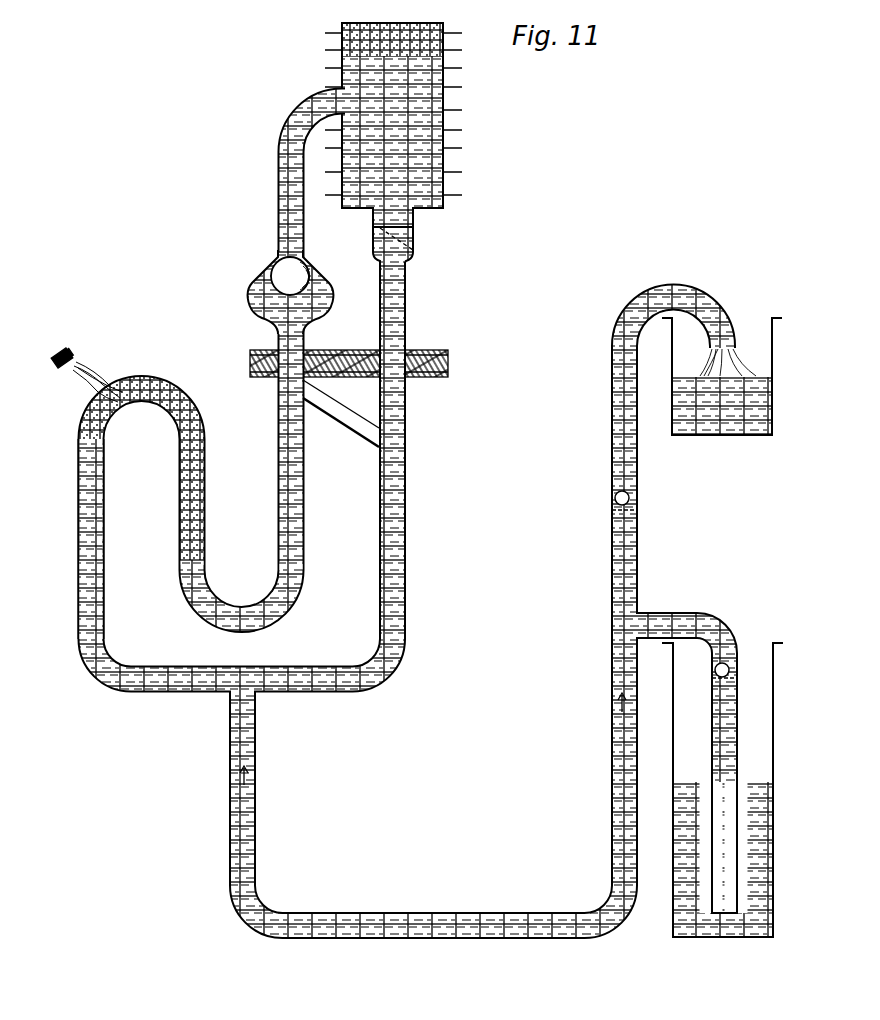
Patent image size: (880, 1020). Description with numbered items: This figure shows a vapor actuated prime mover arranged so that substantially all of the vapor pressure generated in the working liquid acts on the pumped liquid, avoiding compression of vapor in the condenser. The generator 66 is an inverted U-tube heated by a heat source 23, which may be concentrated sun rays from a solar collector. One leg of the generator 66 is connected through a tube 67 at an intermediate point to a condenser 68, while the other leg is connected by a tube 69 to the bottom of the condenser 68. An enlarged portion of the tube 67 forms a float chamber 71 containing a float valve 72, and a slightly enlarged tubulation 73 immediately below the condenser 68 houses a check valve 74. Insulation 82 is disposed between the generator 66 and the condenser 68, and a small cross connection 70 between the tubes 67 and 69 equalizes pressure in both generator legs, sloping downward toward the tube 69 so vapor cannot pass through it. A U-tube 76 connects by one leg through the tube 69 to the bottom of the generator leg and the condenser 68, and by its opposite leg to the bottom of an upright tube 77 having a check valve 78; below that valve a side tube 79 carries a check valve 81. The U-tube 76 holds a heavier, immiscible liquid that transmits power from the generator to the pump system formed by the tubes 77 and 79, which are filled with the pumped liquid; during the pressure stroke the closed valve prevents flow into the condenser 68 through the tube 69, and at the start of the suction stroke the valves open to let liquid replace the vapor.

The heat source 23 is at (68, 350).
The generator 66 is at (103, 503).
The tube 67 is at (278, 165).
The condenser 68 is at (445, 163).
The tube 69 is at (406, 300).
The cross connection 70 is at (358, 428).
The float chamber 71 is at (250, 293).
The float valve 72 is at (303, 284).
The tubulation 73 is at (413, 247).
The check valve 74 is at (406, 229).
The U-tube 76 is at (468, 936).
The upright tube 77 is at (614, 571).
The check valve 78 is at (631, 500).
The side tube 79 is at (690, 628).
The check valve 81 is at (731, 667).
The insulation 82 is at (446, 378).